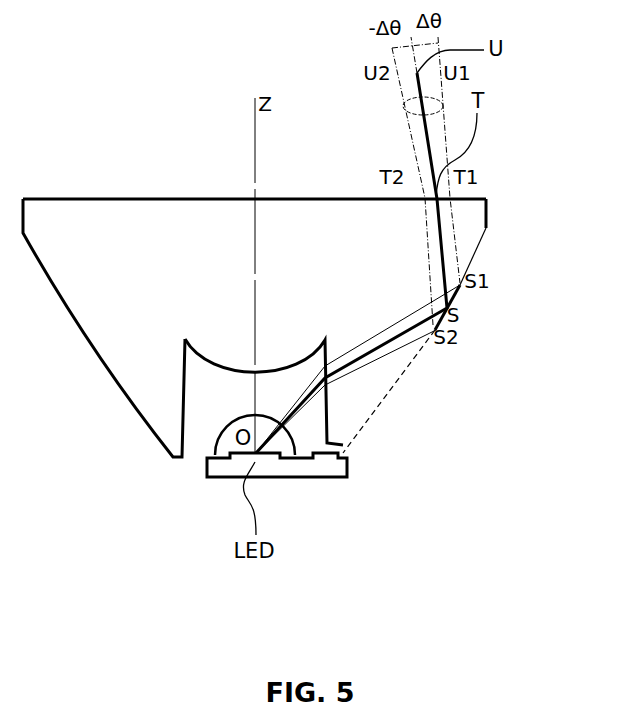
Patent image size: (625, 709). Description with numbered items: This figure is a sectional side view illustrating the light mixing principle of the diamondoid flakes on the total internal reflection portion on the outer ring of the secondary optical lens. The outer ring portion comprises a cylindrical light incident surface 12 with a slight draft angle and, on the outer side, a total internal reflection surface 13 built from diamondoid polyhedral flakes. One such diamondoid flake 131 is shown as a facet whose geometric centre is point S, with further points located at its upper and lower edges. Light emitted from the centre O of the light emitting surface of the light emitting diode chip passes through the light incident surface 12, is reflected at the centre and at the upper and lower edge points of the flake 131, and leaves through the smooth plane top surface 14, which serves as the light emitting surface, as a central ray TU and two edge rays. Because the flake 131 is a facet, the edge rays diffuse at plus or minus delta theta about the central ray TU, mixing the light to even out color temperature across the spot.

The cylindrical light incident surface 12 is at (328, 417).
The total internal reflection surface 13 is at (407, 370).
The diamondoid flake 131 is at (455, 296).
The top surface 14 is at (192, 198).